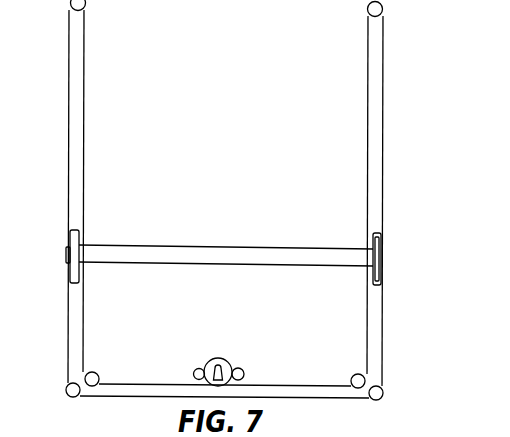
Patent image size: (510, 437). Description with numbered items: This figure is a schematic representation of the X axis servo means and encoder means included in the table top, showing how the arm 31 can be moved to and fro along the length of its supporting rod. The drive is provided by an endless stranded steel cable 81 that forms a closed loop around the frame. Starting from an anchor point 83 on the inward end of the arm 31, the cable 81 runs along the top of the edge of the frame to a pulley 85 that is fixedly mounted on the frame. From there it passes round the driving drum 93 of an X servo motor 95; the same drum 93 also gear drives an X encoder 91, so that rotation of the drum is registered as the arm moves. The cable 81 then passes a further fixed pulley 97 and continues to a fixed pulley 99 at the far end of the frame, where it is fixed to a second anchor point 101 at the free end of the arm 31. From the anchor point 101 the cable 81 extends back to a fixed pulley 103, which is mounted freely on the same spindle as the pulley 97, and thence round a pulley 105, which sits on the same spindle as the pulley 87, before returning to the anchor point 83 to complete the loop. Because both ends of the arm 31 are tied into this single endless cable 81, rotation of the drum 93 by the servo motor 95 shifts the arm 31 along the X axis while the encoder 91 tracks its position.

The arm 31 is at (213, 229).
The endless stranded steel cable 81 is at (87, 125).
The anchor point 83 is at (66, 254).
The pulley 85 is at (87, 8).
The pulley 87 is at (97, 372).
The X encoder 91 is at (198, 367).
The driving drum 93 is at (218, 357).
The X servo motor 95 is at (244, 366).
The fixed pulley 97 is at (356, 374).
The fixed pulley 99 is at (367, 8).
The anchor point 101 is at (362, 247).
The fixed pulley 103 is at (381, 398).
The pulley 105 is at (65, 395).